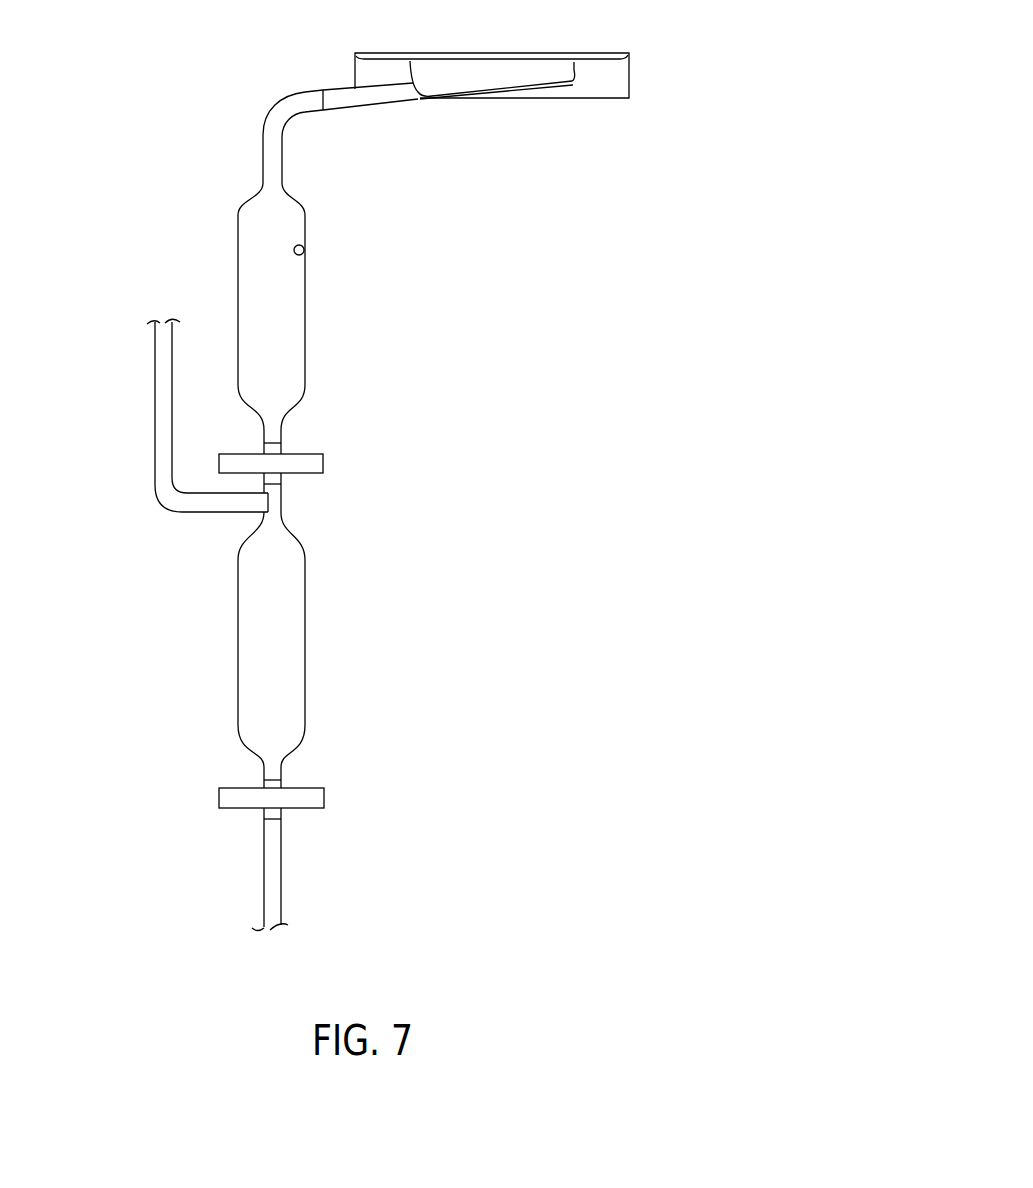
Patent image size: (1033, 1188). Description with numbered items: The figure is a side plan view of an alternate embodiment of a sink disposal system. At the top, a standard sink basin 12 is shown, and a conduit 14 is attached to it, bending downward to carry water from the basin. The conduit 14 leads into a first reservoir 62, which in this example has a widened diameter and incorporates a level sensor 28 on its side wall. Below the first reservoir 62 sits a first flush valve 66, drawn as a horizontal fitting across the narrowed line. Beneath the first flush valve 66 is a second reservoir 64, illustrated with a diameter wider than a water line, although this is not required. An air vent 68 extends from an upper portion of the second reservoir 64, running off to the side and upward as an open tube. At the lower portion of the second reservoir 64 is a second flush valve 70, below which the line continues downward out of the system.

The sink basin 12 is at (613, 82).
The conduit 14 is at (283, 110).
The level sensor 28 is at (305, 250).
The first reservoir 62 is at (297, 323).
The second reservoir 64 is at (292, 660).
The first flush valve 66 is at (315, 460).
The air vent 68 is at (162, 365).
The second flush valve 70 is at (307, 800).